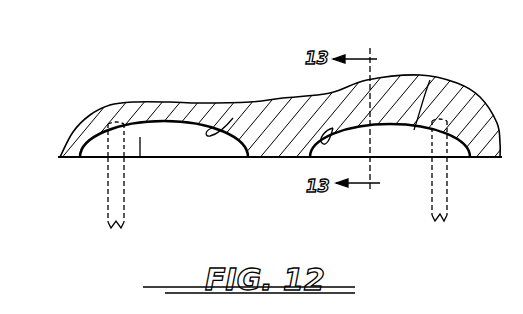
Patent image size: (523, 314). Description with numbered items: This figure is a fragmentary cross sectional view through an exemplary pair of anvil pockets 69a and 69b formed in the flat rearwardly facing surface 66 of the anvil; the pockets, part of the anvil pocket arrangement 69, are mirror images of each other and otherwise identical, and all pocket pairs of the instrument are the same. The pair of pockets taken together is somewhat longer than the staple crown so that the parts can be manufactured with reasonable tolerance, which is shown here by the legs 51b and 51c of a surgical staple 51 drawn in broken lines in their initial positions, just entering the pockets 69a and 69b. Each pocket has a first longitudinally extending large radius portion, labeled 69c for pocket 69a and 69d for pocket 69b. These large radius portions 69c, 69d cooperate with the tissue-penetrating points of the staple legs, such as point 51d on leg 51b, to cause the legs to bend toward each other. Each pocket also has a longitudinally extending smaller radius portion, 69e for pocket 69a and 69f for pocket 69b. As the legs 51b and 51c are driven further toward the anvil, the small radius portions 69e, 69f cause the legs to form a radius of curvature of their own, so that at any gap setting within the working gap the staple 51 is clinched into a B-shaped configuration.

The cam body 69 is at (477, 96).
The anvil pocket 69a is at (183, 120).
The anvil pocket 69b is at (430, 80).
The large radius portion 69c is at (140, 150).
The large radius portion 69d is at (410, 126).
The smaller radius portion 69e is at (233, 118).
The smaller radius portion 69f is at (333, 128).
The flat rearwardly facing surface 66 is at (80, 160).
The surgical staple 51 is at (453, 130).
The leg 51b is at (108, 208).
The leg 51c is at (447, 183).
The tissue-penetrating point 51d is at (118, 123).